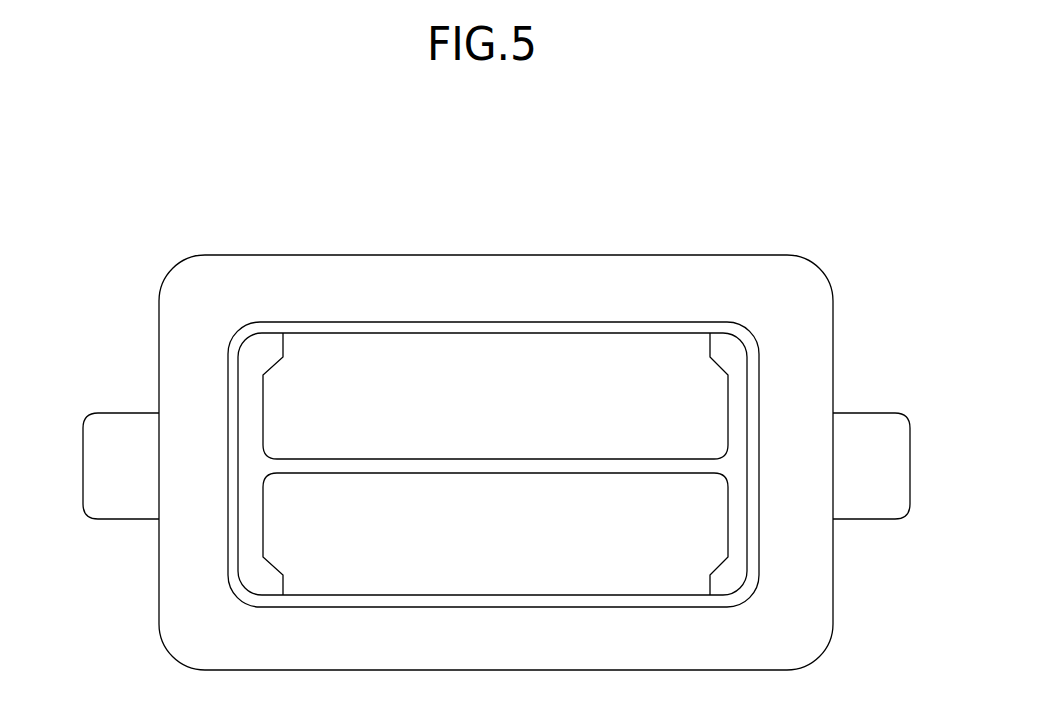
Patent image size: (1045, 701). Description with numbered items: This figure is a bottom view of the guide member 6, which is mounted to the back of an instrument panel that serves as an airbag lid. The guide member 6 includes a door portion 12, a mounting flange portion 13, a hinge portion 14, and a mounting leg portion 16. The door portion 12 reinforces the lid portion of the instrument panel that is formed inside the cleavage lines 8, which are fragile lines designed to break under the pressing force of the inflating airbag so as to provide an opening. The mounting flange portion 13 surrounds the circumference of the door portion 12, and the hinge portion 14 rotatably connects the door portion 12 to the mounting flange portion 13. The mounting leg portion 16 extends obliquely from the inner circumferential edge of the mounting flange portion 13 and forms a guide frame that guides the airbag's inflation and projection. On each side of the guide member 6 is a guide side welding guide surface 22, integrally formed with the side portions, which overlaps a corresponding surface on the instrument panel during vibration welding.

The guide member 6 is at (672, 157).
The cleavage lines 8 is at (267, 343).
The door portion 12 is at (355, 385).
The mounting flange portion 13 is at (637, 292).
The hinge portion 14 is at (418, 350).
The mounting leg portion 16 is at (542, 323).
The guide side welding guide surface 22 is at (122, 411).